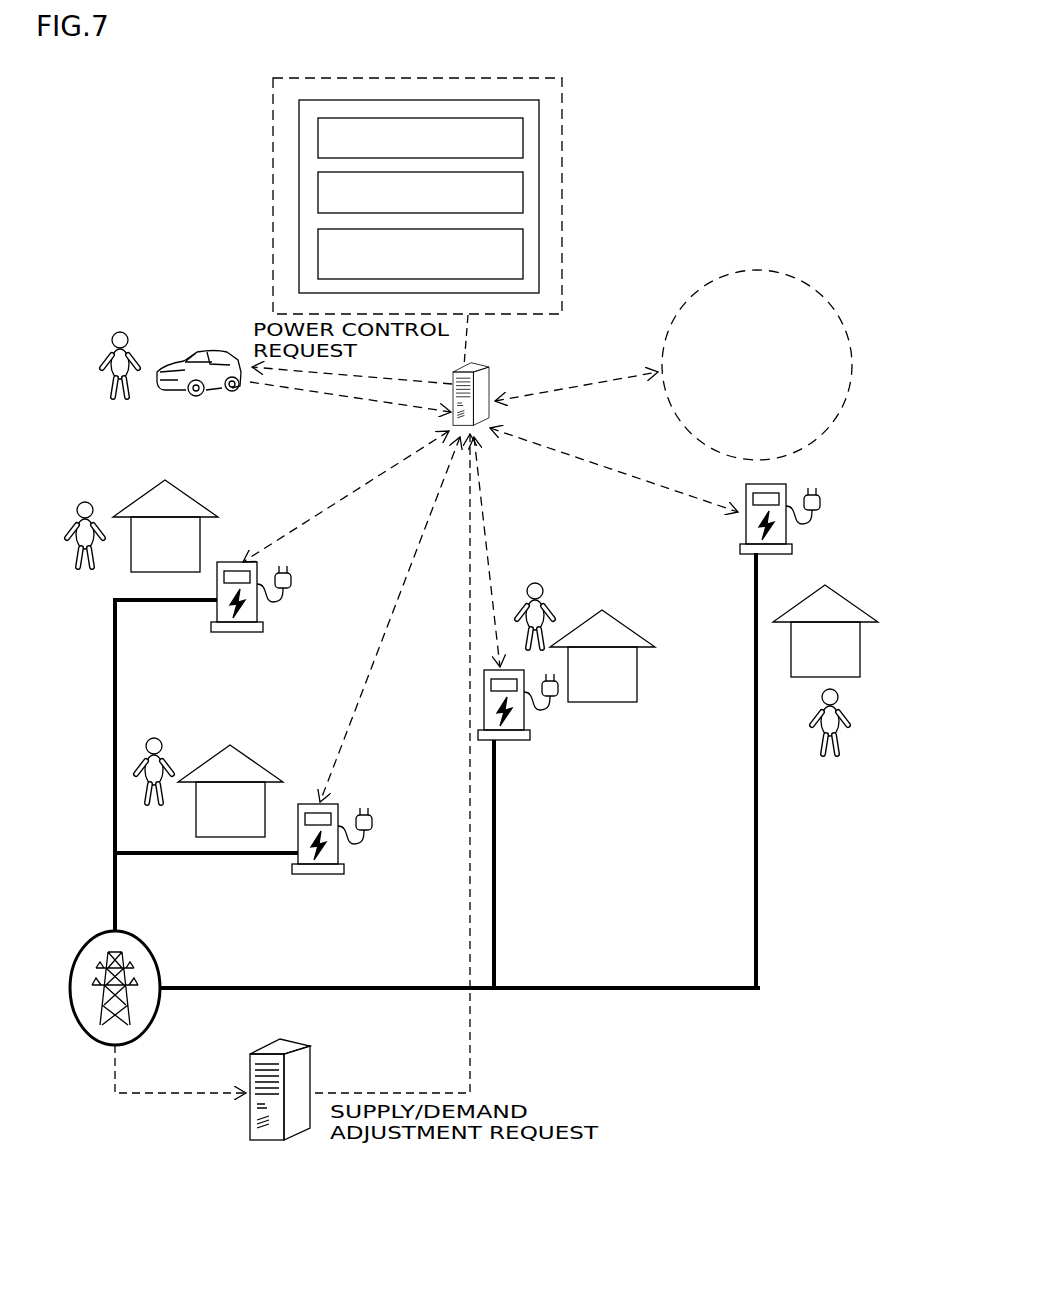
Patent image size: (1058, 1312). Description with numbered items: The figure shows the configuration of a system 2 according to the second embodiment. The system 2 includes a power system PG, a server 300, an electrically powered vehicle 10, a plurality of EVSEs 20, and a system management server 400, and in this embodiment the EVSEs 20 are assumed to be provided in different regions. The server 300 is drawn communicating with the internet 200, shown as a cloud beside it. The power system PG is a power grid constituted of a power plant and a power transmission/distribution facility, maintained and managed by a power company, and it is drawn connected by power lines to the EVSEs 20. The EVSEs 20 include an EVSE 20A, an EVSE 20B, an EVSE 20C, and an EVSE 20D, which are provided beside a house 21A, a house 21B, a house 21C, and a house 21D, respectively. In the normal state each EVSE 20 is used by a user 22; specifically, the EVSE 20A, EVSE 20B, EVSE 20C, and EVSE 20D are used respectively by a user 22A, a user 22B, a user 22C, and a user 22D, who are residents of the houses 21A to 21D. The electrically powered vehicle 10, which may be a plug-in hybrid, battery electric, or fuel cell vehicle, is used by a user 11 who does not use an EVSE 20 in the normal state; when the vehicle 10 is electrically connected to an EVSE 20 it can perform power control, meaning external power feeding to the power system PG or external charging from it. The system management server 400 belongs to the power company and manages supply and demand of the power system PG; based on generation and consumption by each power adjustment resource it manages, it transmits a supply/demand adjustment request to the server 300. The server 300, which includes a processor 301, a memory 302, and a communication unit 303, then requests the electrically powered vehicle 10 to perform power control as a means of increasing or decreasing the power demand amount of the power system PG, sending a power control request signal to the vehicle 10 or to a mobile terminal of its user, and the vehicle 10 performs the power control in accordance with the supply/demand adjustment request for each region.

The system 2 is at (141, 70).
The electrically powered vehicle 10 is at (210, 398).
The user 11 is at (124, 333).
The EVSE 20 is at (282, 667).
The EVSE 20A is at (243, 634).
The EVSE 20B is at (507, 742).
The EVSE 20C is at (767, 555).
The EVSE 20D is at (322, 875).
The house 21A is at (195, 498).
The house 21B is at (627, 621).
The house 21C is at (845, 596).
The house 21D is at (256, 760).
The user 22 is at (118, 478).
The user 22A is at (86, 501).
The user 22B is at (536, 581).
The user 22C is at (830, 760).
The user 22D is at (154, 737).
The internet 200 is at (790, 284).
The server 300 is at (481, 371).
The processor 301 is at (524, 140).
The memory 302 is at (524, 195).
The communication unit 303 is at (524, 262).
The system management server 400 is at (302, 1046).
The power system PG is at (143, 945).